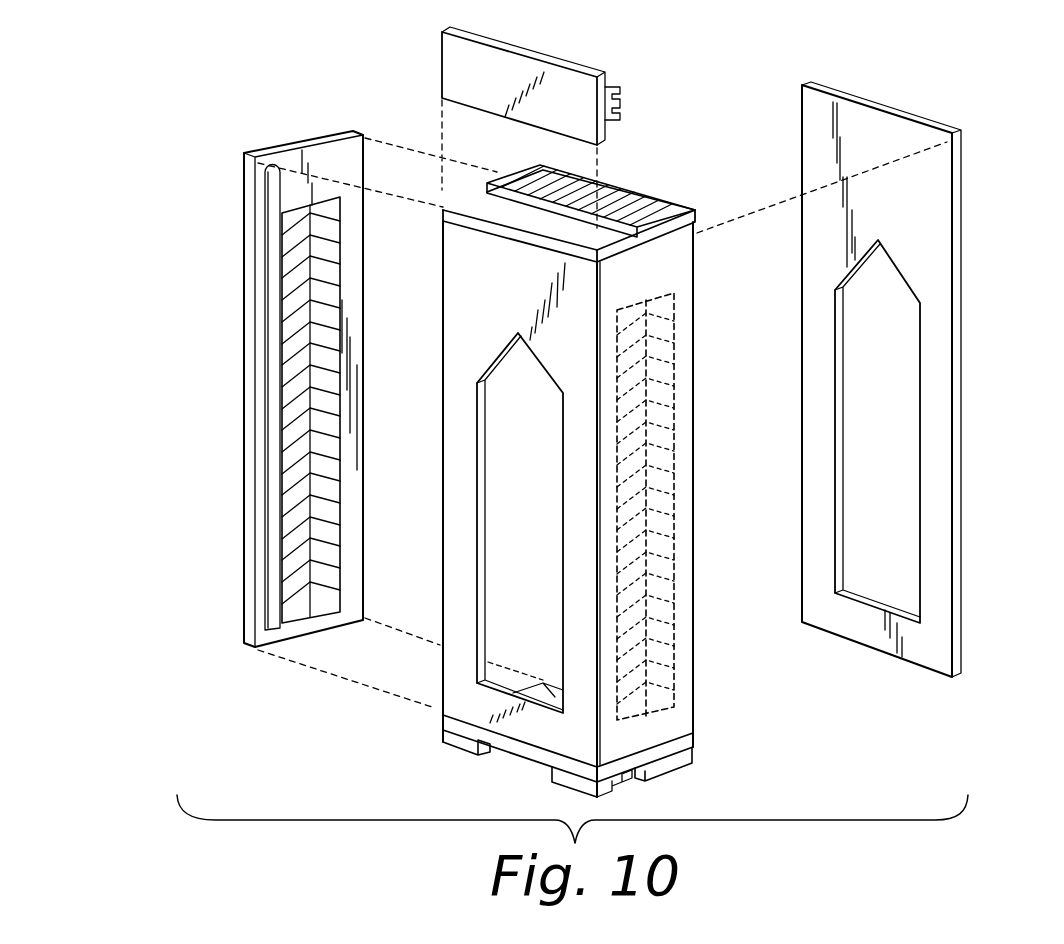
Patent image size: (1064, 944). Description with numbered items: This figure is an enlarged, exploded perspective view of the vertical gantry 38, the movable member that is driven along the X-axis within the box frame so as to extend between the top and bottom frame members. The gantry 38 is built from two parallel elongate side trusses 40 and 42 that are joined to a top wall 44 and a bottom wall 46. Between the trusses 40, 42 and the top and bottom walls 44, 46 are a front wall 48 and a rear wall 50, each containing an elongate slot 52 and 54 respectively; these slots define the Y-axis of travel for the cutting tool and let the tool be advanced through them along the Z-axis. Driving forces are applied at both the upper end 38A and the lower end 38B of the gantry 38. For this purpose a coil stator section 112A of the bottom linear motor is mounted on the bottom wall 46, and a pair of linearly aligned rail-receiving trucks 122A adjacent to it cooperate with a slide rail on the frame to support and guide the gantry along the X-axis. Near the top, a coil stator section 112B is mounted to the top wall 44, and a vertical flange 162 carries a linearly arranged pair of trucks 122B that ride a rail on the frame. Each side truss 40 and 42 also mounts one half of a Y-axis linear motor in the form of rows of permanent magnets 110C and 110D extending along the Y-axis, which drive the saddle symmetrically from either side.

The vertical gantry 38 is at (713, 92).
The upper end of the gantry 38A is at (648, 283).
The lower end of the gantry 38B is at (676, 717).
The side truss 40 is at (290, 155).
The side truss 42 is at (682, 259).
The top wall 44 is at (465, 212).
The bottom wall 46 is at (553, 697).
The front wall 48 is at (462, 298).
The rear wall 50 is at (930, 220).
The elongate slot 52 is at (477, 424).
The elongate slot 54 is at (918, 393).
The row of permanent magnets 110C is at (330, 536).
The row of permanent magnets 110D is at (665, 572).
The coil stator section 112A is at (672, 758).
The coil stator section 112B is at (675, 202).
The rail-receiving trucks 122A is at (460, 740).
The trucks 122B is at (612, 83).
The vertical flange 162 is at (462, 53).